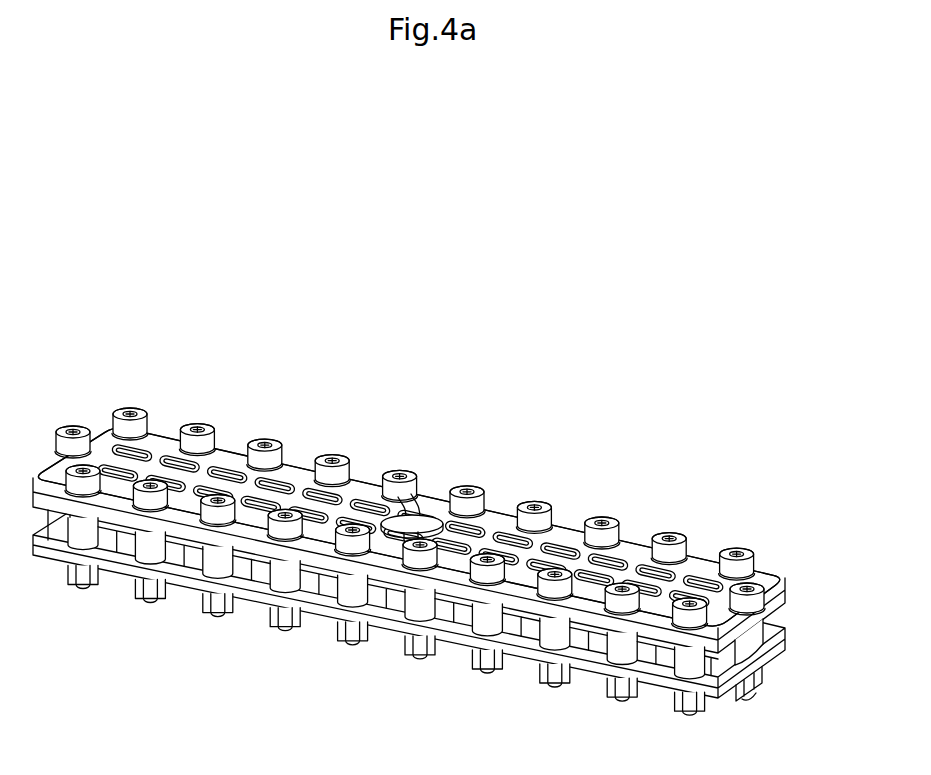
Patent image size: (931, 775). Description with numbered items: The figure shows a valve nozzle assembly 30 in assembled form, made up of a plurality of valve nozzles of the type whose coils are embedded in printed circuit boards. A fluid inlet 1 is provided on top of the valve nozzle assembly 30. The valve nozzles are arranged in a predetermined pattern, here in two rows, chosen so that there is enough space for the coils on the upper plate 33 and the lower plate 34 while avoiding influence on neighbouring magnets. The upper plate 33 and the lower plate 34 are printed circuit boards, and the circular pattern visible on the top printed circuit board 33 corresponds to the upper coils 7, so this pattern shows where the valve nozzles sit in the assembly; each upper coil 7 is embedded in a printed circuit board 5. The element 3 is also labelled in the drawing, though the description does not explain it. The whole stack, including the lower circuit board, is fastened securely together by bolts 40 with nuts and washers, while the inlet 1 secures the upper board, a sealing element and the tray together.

The inlet 1 is at (412, 476).
The spacers 3 is at (752, 650).
The printed circuit board 5 is at (157, 592).
The upper coil 7 is at (622, 560).
The valve nozzle assembly 30 is at (268, 380).
The upper plate 33 is at (497, 516).
The lower plate 34 is at (452, 640).
The bolts 40 is at (120, 410).